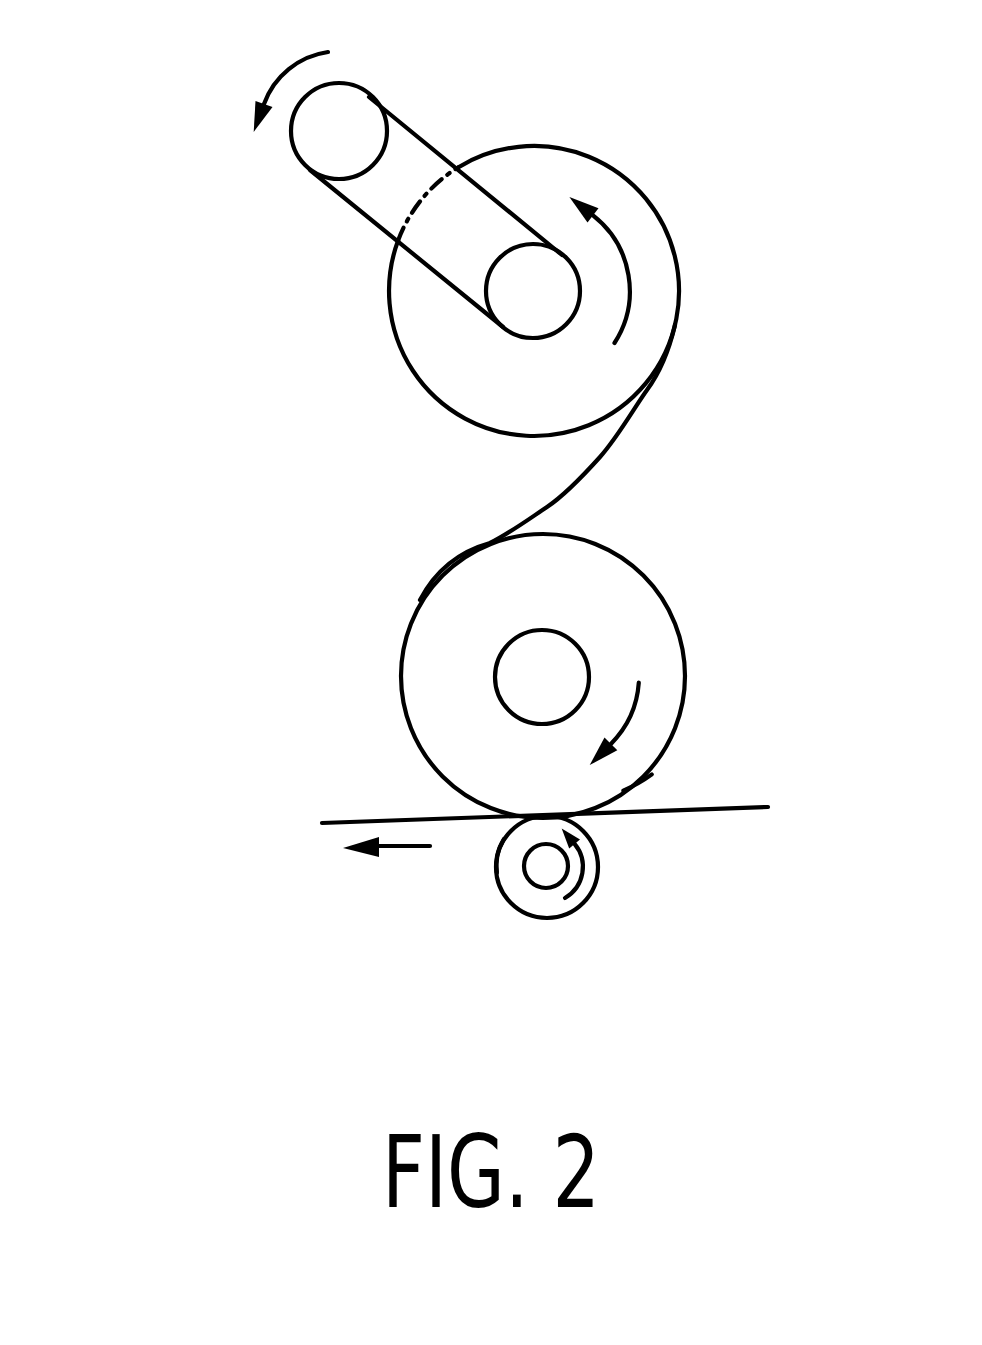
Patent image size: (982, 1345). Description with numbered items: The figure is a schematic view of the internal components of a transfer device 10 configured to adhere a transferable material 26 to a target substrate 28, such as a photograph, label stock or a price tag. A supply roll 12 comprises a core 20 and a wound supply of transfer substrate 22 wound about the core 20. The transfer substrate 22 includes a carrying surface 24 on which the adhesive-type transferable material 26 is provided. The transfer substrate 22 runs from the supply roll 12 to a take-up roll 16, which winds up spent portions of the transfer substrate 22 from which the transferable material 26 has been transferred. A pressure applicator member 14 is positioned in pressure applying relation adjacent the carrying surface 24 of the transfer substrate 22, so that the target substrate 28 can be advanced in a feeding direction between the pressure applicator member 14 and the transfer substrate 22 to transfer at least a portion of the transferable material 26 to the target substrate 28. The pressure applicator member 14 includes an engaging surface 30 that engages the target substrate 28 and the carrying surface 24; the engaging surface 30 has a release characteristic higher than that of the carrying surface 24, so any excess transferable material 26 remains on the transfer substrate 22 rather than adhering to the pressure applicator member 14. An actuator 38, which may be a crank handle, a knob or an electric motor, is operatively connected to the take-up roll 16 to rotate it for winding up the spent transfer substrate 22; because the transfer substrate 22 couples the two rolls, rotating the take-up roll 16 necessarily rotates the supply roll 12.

The transfer device 10 is at (153, 145).
The supply roll 12 is at (640, 603).
The pressure applicator member 14 is at (549, 903).
The take-up roll 16 is at (558, 179).
The core 20 is at (523, 663).
The transfer substrate 22 is at (603, 455).
The carrying surface 24 is at (720, 694).
The transferable material 26 is at (638, 786).
The target substrate 28 is at (745, 812).
The engaging surface 30 is at (493, 855).
The actuator 38 is at (408, 155).